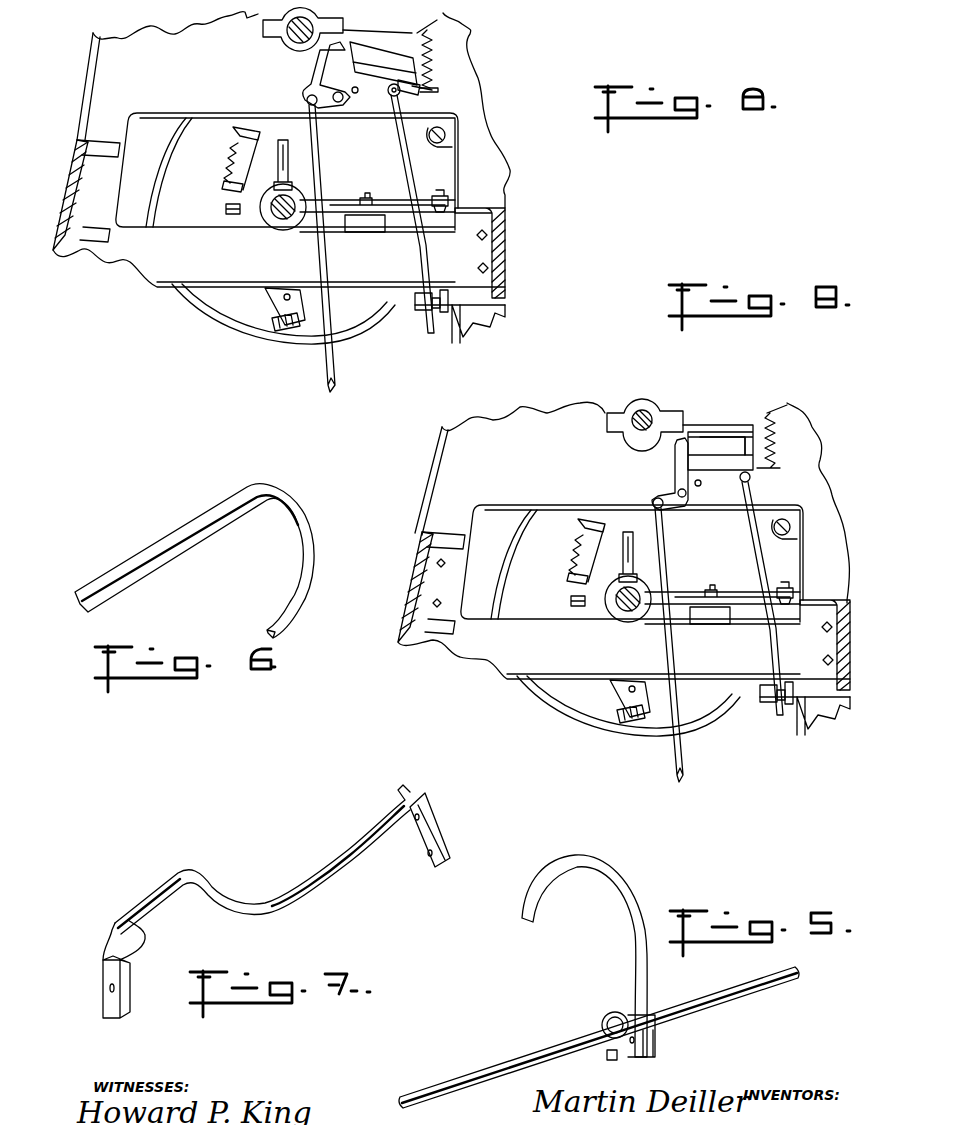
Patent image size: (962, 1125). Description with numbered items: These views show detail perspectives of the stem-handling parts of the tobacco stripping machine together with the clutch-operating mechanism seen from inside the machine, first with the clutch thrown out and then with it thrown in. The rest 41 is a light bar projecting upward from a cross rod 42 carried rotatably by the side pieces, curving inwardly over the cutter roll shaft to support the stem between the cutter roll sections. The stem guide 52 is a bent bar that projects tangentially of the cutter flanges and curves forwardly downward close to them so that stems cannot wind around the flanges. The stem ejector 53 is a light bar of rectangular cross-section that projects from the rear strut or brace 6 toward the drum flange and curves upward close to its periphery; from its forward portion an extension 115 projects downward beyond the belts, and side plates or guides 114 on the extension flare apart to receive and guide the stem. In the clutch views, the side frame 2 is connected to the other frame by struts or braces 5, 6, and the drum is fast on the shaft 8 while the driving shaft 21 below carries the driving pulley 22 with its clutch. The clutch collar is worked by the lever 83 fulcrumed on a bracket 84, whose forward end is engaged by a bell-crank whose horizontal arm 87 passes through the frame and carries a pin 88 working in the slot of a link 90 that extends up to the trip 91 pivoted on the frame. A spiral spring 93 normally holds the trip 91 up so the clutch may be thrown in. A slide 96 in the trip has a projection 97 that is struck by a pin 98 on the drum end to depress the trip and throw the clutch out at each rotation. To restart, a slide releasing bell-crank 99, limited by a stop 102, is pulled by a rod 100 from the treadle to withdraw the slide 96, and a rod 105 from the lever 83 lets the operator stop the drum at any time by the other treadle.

In FIG. 8, the side piece or frame 2 is at (281, 149).
In FIG. 9, the side piece or frame 2 is at (452, 460).
In FIG. 8, the strut or brace 5 is at (505, 250).
In FIG. 9, the strut or brace 5 is at (838, 712).
In FIG. 8, the rear strut or brace 6 is at (79, 185).
In FIG. 9, the rear strut or brace 6 is at (410, 586).
In FIG. 8, the shaft 8 is at (287, 43).
In FIG. 9, the shaft 8 is at (643, 410).
In FIG. 8, the driving shaft 21 is at (283, 231).
In FIG. 9, the driving shaft 21 is at (622, 622).
In FIG. 8, the driving pulley 22 is at (226, 320).
In FIG. 9, the driving pulley 22 is at (590, 722).
In FIG. 8, the lever 83 is at (338, 197).
In FIG. 9, the lever 83 is at (683, 590).
In FIG. 8, the bracket 84 is at (362, 224).
In FIG. 9, the bracket 84 is at (705, 615).
In FIG. 8, the arm of bell-crank lever 87 is at (447, 305).
In FIG. 9, the arm of bell-crank lever 87 is at (787, 675).
In FIG. 8, the pin 88 is at (425, 307).
In FIG. 9, the pin 88 is at (762, 697).
In FIG. 8, the link 90 is at (412, 185).
In FIG. 9, the link 90 is at (765, 566).
In FIG. 8, the trip 91 is at (413, 82).
In FIG. 8, the spiral spring 93 is at (436, 84).
In FIG. 8, the slide 96 is at (376, 62).
In FIG. 9, the slide 96 is at (708, 440).
In FIG. 8, the projecting portion 97 is at (415, 63).
In FIG. 9, the projecting portion 97 is at (732, 450).
In FIG. 8, the pin 98 is at (411, 45).
In FIG. 9, the pin 98 is at (772, 436).
In FIG. 8, the slide releasing bell-crank 99 is at (337, 76).
In FIG. 9, the slide releasing bell-crank 99 is at (680, 472).
In FIG. 8, the rod 100 is at (305, 378).
In FIG. 9, the rod 100 is at (680, 764).
In FIG. 8, the stop 102 is at (353, 100).
In FIG. 9, the stop 102 is at (699, 493).
In FIG. 8, the rod 105 is at (448, 200).
In FIG. 9, the rod 105 is at (793, 590).
In FIG. 5, the rest 41 is at (618, 900).
In FIG. 5, the cross rod 42 is at (480, 1075).
In FIG. 6, the stem guide 52 is at (218, 515).
In FIG. 7, the stem ejector 53 is at (317, 878).
In FIG. 7, the side plates or guides 114 is at (402, 785).
In FIG. 7, the extension 115 is at (428, 875).